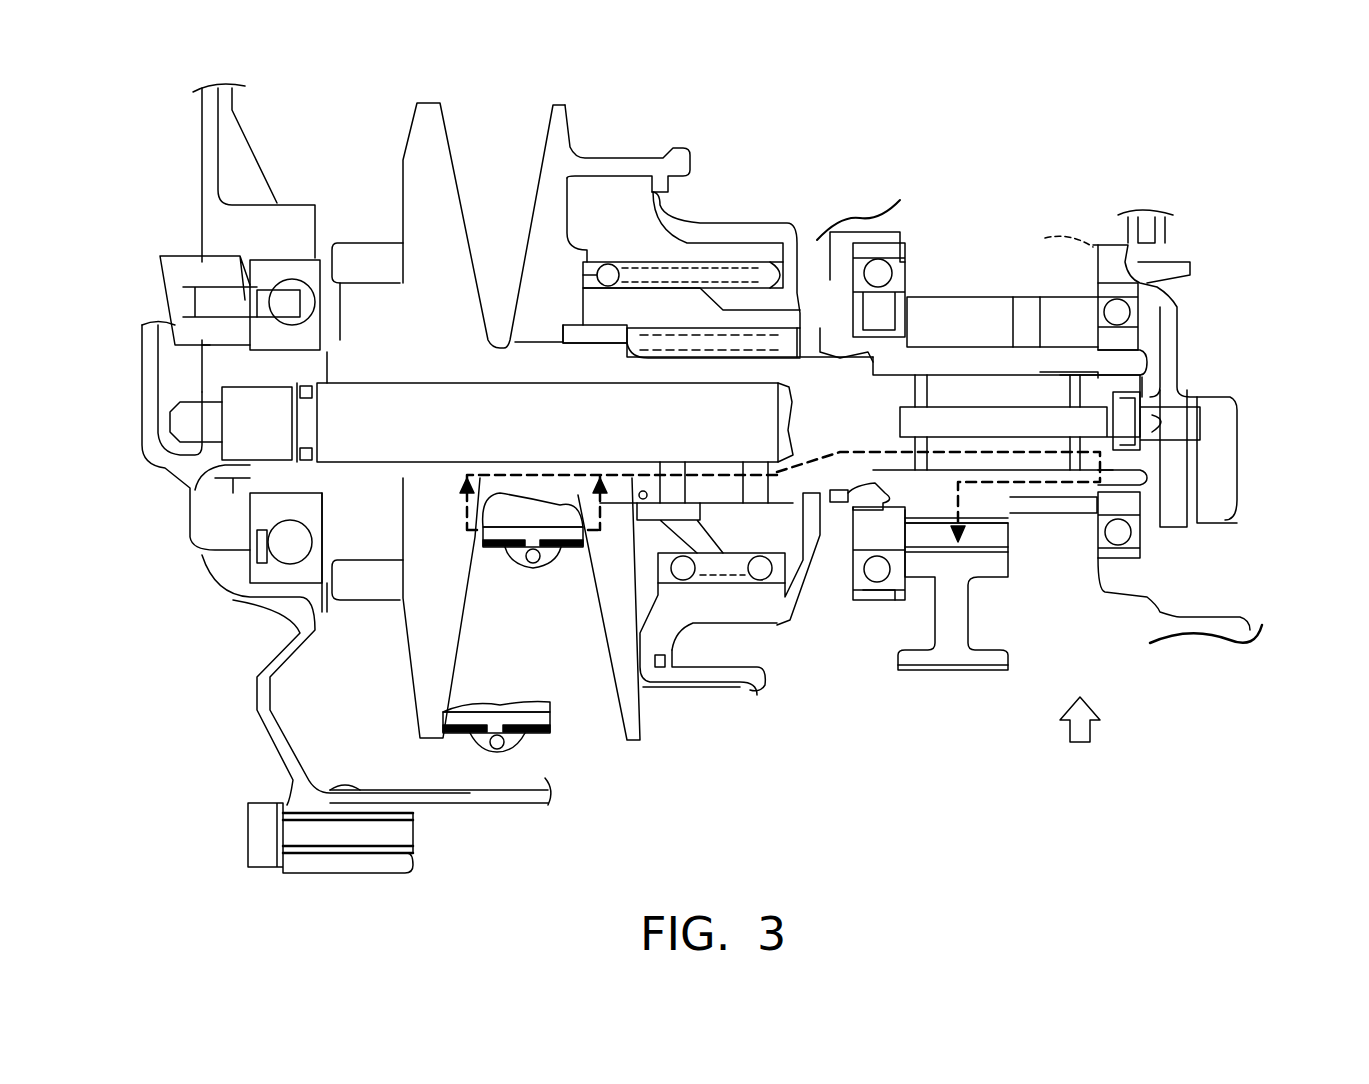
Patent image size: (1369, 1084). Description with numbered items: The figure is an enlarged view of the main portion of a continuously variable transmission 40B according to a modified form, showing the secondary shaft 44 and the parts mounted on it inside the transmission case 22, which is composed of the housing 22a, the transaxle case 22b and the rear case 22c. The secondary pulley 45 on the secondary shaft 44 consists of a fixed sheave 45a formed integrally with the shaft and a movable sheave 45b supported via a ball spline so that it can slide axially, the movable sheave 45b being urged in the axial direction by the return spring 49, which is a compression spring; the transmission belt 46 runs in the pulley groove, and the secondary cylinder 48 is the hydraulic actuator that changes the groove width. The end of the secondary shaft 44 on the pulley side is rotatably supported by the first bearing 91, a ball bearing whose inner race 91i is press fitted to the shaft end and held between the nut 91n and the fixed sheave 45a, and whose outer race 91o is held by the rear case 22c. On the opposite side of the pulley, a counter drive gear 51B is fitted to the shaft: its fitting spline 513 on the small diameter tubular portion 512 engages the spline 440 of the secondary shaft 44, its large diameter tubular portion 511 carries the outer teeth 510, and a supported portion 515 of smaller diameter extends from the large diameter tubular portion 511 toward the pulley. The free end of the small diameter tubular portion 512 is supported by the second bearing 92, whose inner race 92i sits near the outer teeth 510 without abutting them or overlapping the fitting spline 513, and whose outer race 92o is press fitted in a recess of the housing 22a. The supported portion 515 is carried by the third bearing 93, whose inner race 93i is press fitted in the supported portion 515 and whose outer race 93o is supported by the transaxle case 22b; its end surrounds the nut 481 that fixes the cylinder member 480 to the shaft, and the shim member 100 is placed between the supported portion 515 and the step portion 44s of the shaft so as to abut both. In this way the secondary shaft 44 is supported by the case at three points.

The transmission case 22 is at (198, 168).
The housing 22a is at (1170, 345).
The transaxle case 22b is at (435, 805).
The rear case 22c is at (268, 738).
The continuously variable transmission 40B is at (1168, 150).
The secondary shaft 44 is at (317, 468).
The step portion 44s is at (880, 490).
The secondary pulley 45 is at (650, 728).
The fixed sheave 45a is at (428, 110).
The movable sheave 45b is at (556, 110).
The transmission belt 46 is at (530, 560).
The secondary cylinder 48 is at (740, 218).
The return spring 49 is at (655, 266).
The counter drive gear 51B is at (1038, 507).
The first bearing 91 is at (245, 557).
The inner race 91i is at (273, 336).
The nut 91n is at (228, 517).
The outer race 91o is at (268, 270).
The second bearing 92 is at (1142, 530).
The inner race 92i is at (1128, 338).
The outer race 92o is at (1118, 550).
The third bearing 93 is at (887, 560).
The inner race 93i is at (890, 535).
The outer race 93o is at (890, 260).
The shim member 100 is at (865, 345).
The spline 440 is at (1120, 462).
The cylinder member 480 is at (757, 612).
The nut 481 is at (835, 335).
The outer teeth 510 is at (963, 312).
The large diameter tubular portion 511 is at (978, 345).
The small diameter tubular portion 512 is at (1115, 480).
The fitting spline 513 is at (1053, 378).
The supported portion 515 is at (918, 586).